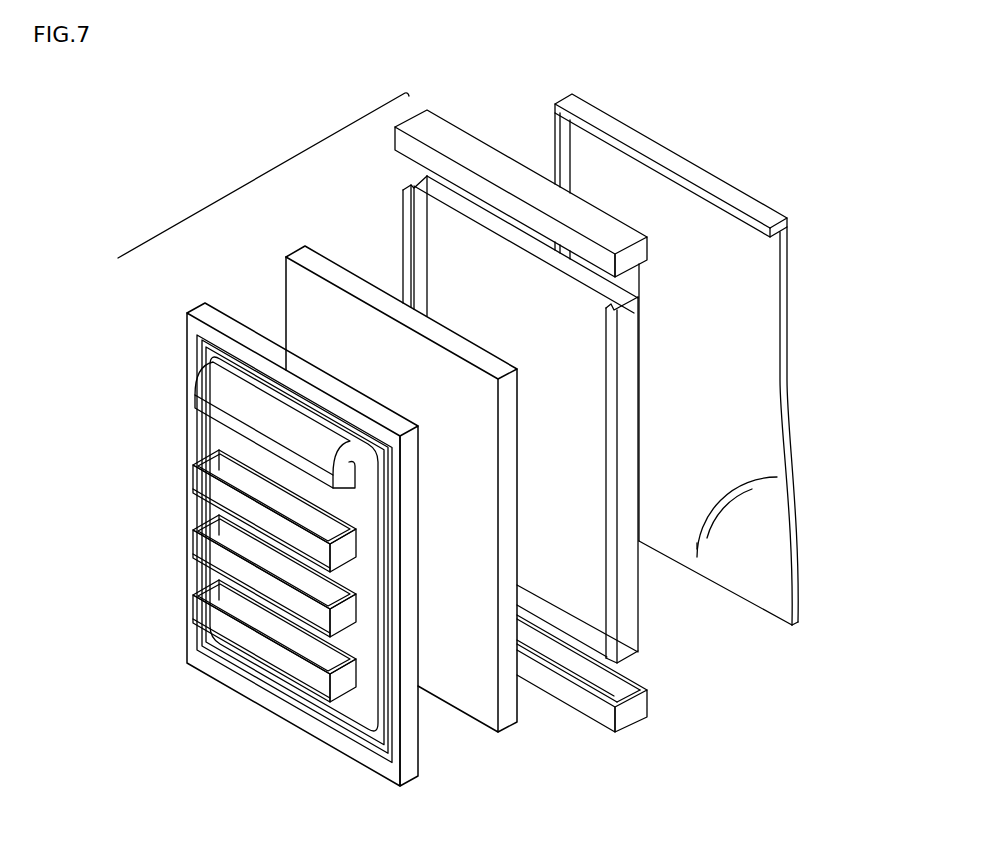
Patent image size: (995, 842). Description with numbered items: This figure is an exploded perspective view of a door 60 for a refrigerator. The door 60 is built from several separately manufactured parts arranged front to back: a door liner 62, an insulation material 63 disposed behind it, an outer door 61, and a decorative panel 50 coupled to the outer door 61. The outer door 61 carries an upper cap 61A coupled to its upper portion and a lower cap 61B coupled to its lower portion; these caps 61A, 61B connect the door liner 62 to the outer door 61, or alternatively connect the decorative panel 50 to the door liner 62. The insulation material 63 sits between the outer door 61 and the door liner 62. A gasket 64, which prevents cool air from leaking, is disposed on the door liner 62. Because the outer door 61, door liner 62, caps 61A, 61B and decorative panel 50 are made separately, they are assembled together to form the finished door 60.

The decorative panel 50 is at (760, 320).
The door 60 is at (268, 180).
The outer door 61 is at (640, 616).
The upper cap 61A is at (459, 135).
The lower cap 61B is at (630, 715).
The door liner 62 is at (367, 728).
The insulation material 63 is at (486, 697).
The gasket 64 is at (386, 742).